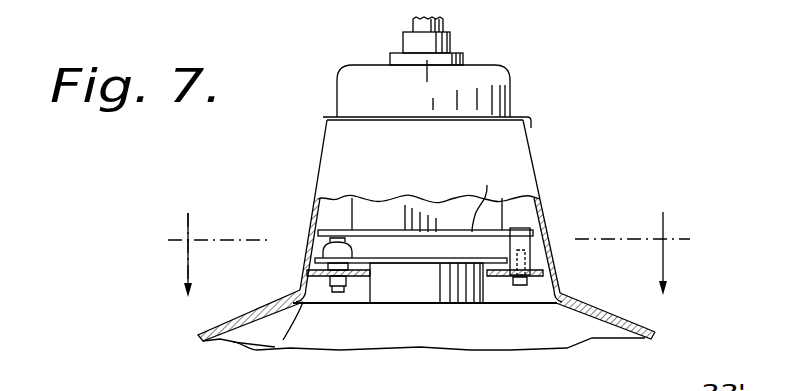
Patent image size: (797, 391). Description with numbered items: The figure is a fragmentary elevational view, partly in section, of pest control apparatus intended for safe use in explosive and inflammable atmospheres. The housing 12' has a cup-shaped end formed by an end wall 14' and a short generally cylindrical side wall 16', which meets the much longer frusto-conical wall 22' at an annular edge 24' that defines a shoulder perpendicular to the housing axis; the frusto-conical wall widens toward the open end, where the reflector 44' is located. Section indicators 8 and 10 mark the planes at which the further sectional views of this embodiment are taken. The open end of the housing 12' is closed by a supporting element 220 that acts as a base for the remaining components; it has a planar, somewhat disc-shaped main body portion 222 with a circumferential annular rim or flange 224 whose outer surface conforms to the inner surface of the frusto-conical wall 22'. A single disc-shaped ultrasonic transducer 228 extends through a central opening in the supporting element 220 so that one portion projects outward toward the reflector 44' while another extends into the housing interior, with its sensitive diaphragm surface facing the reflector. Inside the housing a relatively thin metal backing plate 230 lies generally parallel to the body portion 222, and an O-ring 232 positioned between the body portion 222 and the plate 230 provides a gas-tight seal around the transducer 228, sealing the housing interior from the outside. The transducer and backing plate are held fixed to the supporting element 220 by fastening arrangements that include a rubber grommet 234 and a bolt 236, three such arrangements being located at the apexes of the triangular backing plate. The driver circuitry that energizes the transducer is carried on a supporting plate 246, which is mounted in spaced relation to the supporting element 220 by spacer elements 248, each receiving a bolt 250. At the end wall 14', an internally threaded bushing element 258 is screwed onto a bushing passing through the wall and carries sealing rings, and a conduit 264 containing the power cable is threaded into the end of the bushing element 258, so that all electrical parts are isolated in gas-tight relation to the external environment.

The central axis 10 is at (413, 23).
The housing 12' is at (392, 211).
The end wall 14' is at (454, 86).
The cylindrical side wall 16' is at (509, 101).
The frusto-conical wall 22' is at (575, 228).
The annular edge 24' is at (399, 103).
The reflector 44' is at (468, 334).
The supporting element 220 is at (317, 290).
The main body portion 222 is at (545, 310).
The annular rim or flange 224 is at (287, 340).
The transducer 228 is at (403, 296).
The backing plate 230 is at (424, 246).
The O-ring 232 is at (500, 278).
The rubber grommet 234 is at (300, 268).
The bolt 236 is at (305, 243).
The supporting plate 246 is at (449, 194).
The spacer element 248 is at (531, 248).
The bolt 250 is at (520, 284).
The bushing element 258 is at (403, 43).
The conduit 264 is at (443, 23).
The section line 8- 8 is at (426, 251).